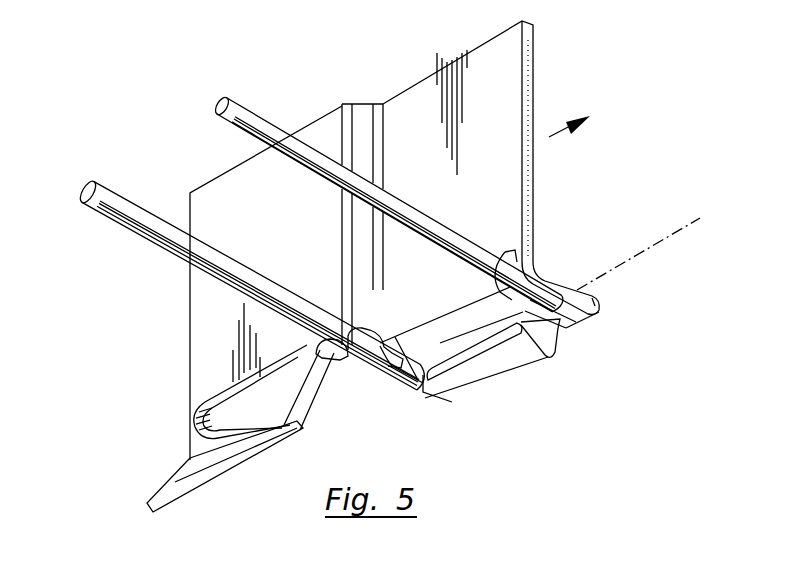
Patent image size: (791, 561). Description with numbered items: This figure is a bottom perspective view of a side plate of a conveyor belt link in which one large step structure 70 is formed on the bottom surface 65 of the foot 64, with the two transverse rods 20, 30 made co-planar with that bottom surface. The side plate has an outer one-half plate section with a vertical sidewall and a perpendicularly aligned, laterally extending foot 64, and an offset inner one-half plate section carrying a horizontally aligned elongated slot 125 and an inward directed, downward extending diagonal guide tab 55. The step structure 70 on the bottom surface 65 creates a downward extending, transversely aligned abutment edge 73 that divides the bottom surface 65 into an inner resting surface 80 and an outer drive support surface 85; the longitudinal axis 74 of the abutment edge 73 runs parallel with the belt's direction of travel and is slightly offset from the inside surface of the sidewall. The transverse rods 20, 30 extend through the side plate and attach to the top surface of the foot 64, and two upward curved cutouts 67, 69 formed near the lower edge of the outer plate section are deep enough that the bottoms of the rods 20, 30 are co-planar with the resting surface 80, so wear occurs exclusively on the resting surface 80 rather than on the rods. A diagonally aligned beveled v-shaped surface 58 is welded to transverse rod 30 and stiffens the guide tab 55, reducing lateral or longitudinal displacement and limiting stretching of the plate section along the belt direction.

The transverse rod 20 is at (213, 106).
The transverse rod 30 is at (80, 190).
The guide tab 55 is at (165, 478).
The beveled v-shaped surface 58 is at (310, 400).
The foot 64 is at (612, 304).
The bottom surface 65 is at (580, 330).
The upward curved cutout 67 is at (356, 332).
The upward curved cutout 69 is at (500, 252).
The step structure 70 is at (515, 389).
The abutment edge 73 is at (450, 372).
The longitudinal axis 74 is at (660, 244).
The inner resting surface 80 is at (450, 345).
The outer drive support surface 85 is at (518, 357).
The elongated slot 125 is at (235, 397).